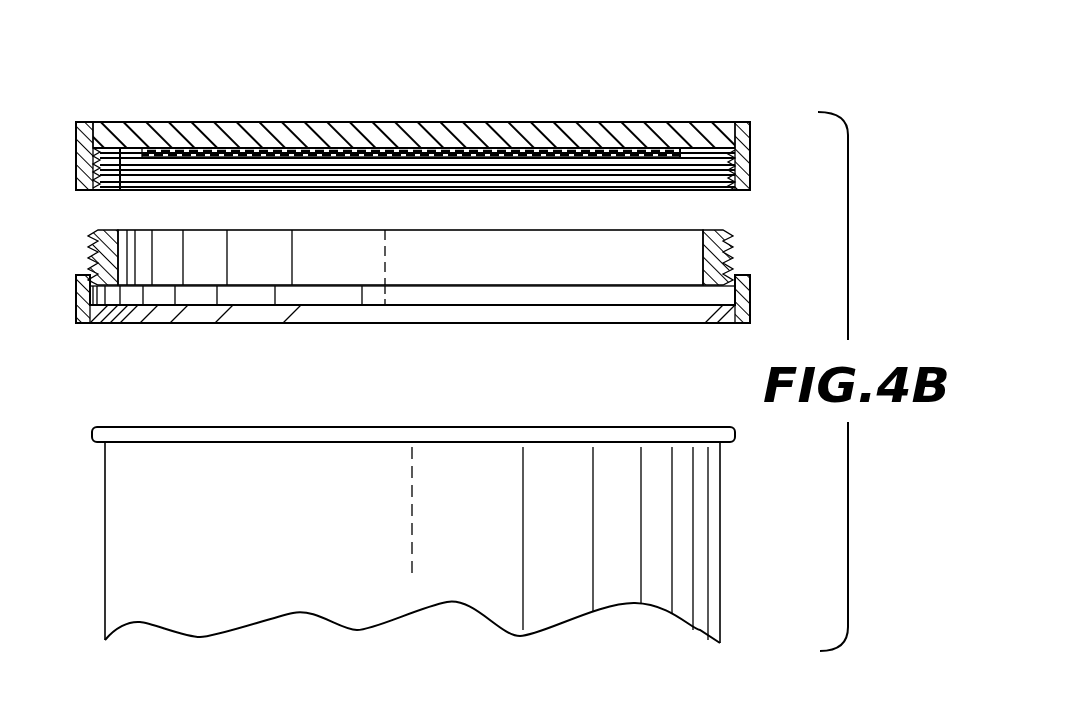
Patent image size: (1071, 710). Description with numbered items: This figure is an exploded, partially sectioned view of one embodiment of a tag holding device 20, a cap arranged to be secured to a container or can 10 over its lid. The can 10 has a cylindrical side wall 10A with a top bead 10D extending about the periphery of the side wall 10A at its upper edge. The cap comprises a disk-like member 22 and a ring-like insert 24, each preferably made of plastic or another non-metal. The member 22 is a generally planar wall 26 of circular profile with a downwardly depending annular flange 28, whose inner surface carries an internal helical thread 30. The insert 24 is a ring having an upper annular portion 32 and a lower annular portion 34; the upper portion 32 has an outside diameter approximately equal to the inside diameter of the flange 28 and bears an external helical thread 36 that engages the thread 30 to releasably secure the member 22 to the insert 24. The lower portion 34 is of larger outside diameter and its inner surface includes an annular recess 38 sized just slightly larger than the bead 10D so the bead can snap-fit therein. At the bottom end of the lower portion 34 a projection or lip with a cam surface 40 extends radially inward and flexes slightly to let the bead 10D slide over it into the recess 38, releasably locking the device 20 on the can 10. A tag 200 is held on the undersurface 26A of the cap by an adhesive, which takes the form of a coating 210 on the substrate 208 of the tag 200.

The can 10 is at (382, 541).
The side wall 10A is at (195, 617).
The top bead 10D is at (92, 437).
The tag holding device 20 is at (394, 117).
The disk-like member 22 is at (512, 120).
The ring-like insert 24 is at (425, 287).
The planar wall 26 is at (232, 122).
The undersurface 26A is at (123, 150).
The annular flange 28 is at (78, 142).
The internal helical thread 30 is at (110, 190).
The upper annular portion 32 is at (722, 232).
The lower annular portion 34 is at (745, 306).
The external helical thread 36 is at (90, 250).
The annular recess 38 is at (247, 296).
The cam surface 40 is at (100, 313).
The tag 200 is at (684, 122).
The substrate 208 is at (641, 122).
The coating 210 is at (382, 123).